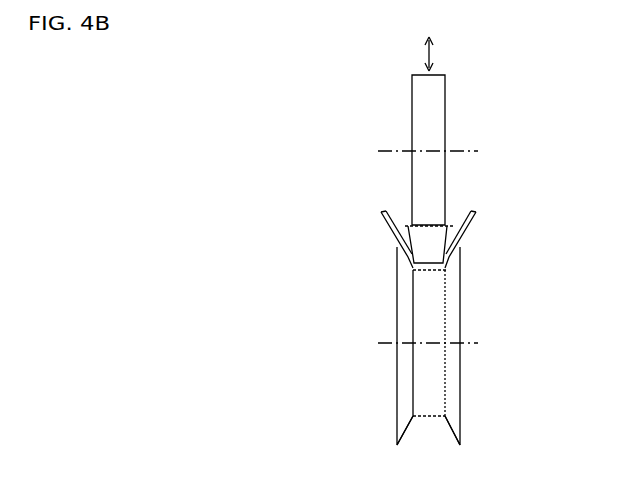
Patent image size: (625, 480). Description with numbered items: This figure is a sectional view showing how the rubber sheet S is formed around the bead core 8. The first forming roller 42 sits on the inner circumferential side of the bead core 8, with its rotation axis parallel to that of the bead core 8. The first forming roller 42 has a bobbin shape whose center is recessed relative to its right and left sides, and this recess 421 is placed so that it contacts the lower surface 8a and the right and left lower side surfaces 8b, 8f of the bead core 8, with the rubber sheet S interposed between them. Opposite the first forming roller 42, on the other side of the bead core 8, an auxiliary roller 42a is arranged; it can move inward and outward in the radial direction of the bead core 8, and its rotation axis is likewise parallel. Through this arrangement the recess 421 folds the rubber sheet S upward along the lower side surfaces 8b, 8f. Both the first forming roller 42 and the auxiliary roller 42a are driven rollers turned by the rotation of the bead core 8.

The auxiliary roller 42a is at (445, 112).
The first forming roller 42 is at (460, 335).
The recess 421 is at (404, 430).
The bead core 8 is at (432, 248).
The lower side surface 8b is at (407, 257).
The lower side surface 8f is at (450, 262).
The lower surface 8a is at (447, 270).
The rubber sheet S is at (388, 231).